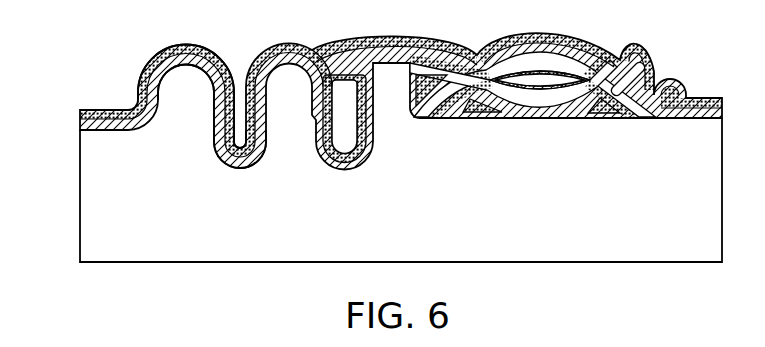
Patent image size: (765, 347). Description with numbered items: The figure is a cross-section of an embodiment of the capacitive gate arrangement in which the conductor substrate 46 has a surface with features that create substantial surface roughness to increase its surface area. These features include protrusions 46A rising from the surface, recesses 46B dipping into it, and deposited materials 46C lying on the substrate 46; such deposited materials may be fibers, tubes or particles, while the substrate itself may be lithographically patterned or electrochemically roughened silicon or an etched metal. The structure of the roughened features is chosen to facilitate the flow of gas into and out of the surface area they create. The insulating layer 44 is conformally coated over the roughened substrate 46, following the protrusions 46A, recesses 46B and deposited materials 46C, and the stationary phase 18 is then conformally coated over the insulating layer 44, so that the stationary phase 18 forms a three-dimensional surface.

The stationary phase 18 is at (106, 110).
The insulating layer 44 is at (80, 124).
The conductor substrate 46 is at (80, 181).
The protrusions 46A is at (186, 64).
The recesses 46B is at (240, 170).
The deposited materials 46C is at (547, 114).